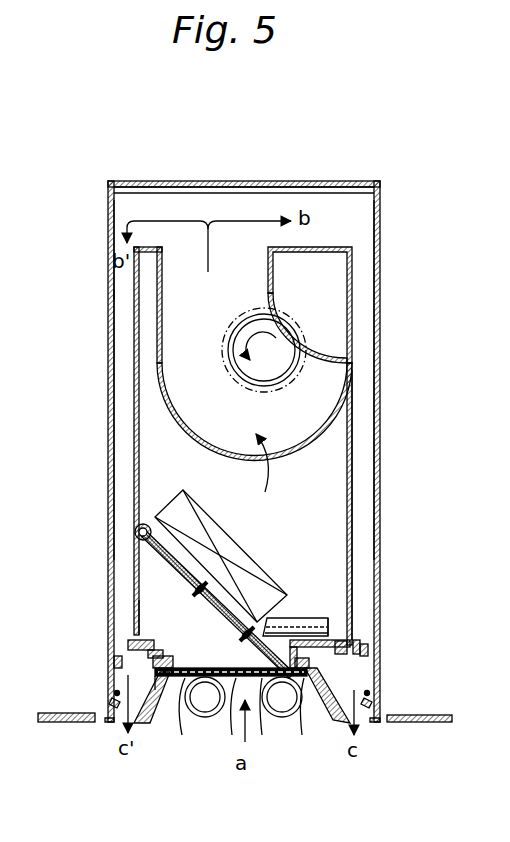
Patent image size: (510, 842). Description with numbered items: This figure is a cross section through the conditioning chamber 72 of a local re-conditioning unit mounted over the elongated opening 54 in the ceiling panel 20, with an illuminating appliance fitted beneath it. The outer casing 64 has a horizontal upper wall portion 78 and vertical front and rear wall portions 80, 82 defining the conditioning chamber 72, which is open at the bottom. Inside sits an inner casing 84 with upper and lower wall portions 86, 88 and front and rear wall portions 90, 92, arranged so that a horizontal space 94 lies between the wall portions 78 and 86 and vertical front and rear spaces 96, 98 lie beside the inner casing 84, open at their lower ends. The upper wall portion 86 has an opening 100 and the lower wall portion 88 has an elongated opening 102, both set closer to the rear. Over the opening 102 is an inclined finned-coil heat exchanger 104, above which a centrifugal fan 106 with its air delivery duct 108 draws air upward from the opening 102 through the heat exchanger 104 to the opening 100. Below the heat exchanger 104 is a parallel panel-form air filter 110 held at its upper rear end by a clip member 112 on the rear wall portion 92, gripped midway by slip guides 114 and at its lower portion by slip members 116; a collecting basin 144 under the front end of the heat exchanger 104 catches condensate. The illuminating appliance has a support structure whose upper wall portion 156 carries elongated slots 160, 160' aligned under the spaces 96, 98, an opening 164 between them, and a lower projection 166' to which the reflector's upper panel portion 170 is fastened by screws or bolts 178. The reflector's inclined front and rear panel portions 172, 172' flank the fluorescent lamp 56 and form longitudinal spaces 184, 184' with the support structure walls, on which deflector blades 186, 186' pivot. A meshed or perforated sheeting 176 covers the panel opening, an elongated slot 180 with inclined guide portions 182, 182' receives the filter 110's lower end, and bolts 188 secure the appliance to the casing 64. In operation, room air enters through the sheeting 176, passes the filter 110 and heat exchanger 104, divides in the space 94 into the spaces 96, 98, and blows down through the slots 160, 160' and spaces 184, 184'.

The ceiling panel 20 is at (440, 723).
The elongated opening 54 is at (377, 723).
The tubular fluorescent lamp 56 is at (270, 735).
The casing 64 is at (153, 178).
The conditioning chamber 72 is at (352, 215).
The horizontal upper wall portion 78 is at (330, 181).
The front wall portion 80 is at (380, 350).
The rear wall portion 82 is at (112, 393).
The inner casing 84 is at (355, 432).
The upper wall portion 86 is at (310, 250).
The lower wall portion 88 is at (330, 612).
The front wall portion 90 is at (352, 482).
The rear wall portion 92 is at (135, 430).
The horizontal space 94 is at (255, 192).
The front space 96 is at (364, 296).
The rear space 98 is at (126, 302).
The opening 100 is at (268, 256).
The elongated opening 102 is at (135, 620).
The heat exchanger 104 is at (262, 556).
The centrifugal fan 106 is at (250, 387).
The air delivery duct 108 is at (140, 330).
The air filter 110 is at (228, 618).
The clip member 112 is at (147, 520).
The slip guides 114 is at (196, 588).
The slip members 116 is at (243, 640).
The collecting basin 144 is at (315, 617).
The horizontal upper wall portion 156 is at (302, 668).
The elongated slot 160 is at (387, 626).
The elongated slot 160' is at (103, 647).
The opening 164 is at (185, 680).
The projection 166' is at (179, 651).
The upper panel portion 170 is at (248, 735).
The front panel portion 172 is at (336, 733).
The rear panel portion 172' is at (167, 707).
The meshed or perforated sheeting 176 is at (222, 717).
The screws or bolts 178 is at (302, 705).
The elongated slot 180 is at (268, 705).
The guide portion 182 is at (296, 615).
The guide portion 182' is at (231, 661).
The longitudinal space 184 is at (424, 682).
The longitudinal space 184' is at (90, 683).
The air-flow deflector blade 186 is at (398, 702).
The air-flow deflector blade 186' is at (70, 699).
The bolts 188 is at (110, 664).